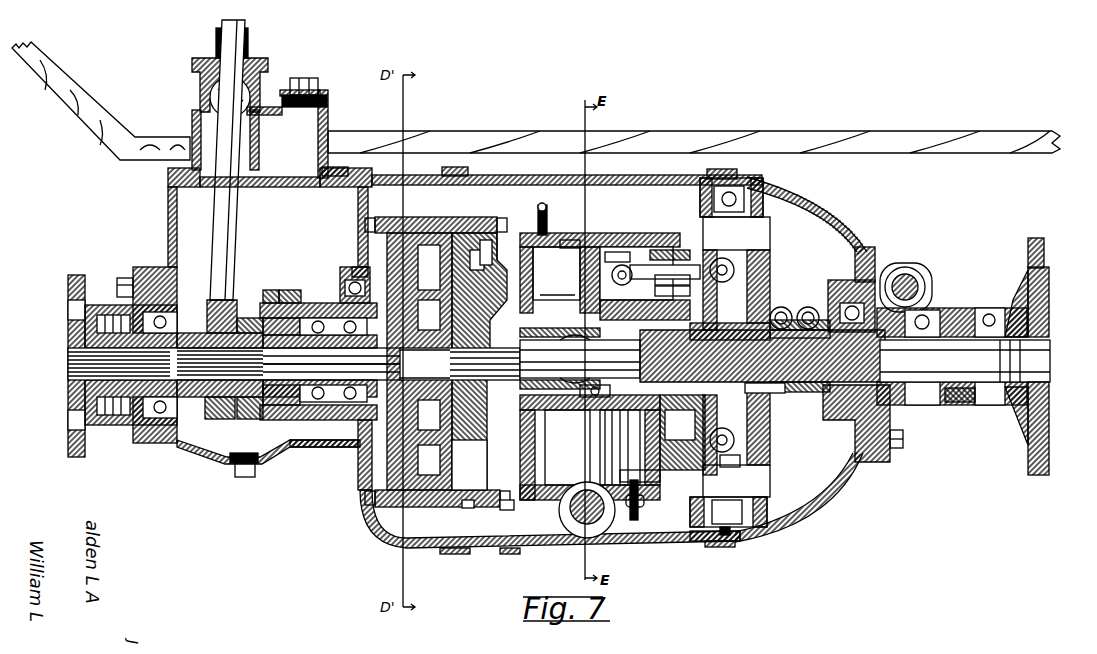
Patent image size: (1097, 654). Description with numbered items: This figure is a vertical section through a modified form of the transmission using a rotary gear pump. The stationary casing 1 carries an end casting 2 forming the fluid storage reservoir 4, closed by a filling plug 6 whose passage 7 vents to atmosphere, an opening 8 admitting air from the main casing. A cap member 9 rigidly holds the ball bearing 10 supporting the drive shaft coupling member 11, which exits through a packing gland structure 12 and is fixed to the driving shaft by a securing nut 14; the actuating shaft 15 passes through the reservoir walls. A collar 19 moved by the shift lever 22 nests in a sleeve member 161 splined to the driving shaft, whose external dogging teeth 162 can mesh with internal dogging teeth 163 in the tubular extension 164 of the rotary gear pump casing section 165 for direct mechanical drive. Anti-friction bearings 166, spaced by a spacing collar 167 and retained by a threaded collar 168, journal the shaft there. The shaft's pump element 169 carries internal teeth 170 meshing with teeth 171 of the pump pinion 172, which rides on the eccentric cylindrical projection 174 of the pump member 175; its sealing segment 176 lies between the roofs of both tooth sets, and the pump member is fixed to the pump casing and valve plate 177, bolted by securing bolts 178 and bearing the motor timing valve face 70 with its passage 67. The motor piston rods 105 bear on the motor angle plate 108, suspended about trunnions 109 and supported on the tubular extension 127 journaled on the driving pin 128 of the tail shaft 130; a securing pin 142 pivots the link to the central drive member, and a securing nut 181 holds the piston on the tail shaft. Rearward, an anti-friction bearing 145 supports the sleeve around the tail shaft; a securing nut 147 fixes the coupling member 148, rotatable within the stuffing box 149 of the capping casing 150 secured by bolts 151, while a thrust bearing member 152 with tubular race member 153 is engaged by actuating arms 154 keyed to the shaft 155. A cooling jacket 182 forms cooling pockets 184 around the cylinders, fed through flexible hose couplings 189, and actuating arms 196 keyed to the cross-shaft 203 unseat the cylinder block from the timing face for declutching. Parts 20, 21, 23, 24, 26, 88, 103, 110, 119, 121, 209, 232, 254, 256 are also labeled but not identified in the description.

The stationary casing 1 is at (655, 545).
The end casting 2 is at (366, 508).
The fluid storage reservoir 4 is at (168, 222).
The filling plug 6 is at (327, 86).
The passage 7 is at (305, 78).
The opening 8 is at (352, 192).
The cap member 9 is at (122, 285).
The ball bearing 10 is at (175, 296).
The drive shaft coupling member 11 is at (68, 305).
The packing gland structure 12 is at (125, 315).
The securing nut 14 is at (70, 346).
The actuating shaft 15 is at (262, 465).
The collar 19 is at (262, 300).
The collar 20 is at (205, 400).
The gear 21 is at (200, 332).
The shift lever 22 is at (240, 148).
The ball 23 is at (210, 104).
The ball socket cap 24 is at (198, 88).
The bearing cap 26 is at (360, 266).
The passage 67 is at (600, 247).
The motor timing valve face 70 is at (582, 245).
The pump piston 88 is at (545, 437).
The pin 103 is at (644, 498).
The motor piston rods 105 is at (620, 286).
The motor angle plate 108 is at (752, 243).
The trunnions 109 is at (755, 181).
The plug 110 is at (778, 508).
The spline shaft 119 is at (710, 155).
The rollers 121 is at (800, 310).
The tubular extension 127 is at (805, 312).
The driving pin 128 is at (775, 410).
The tail shaft 130 is at (666, 418).
The securing pin 142 is at (775, 390).
The anti-friction bearing 145 is at (866, 262).
The securing nut 147 is at (1055, 340).
The coupling member 148 is at (1028, 256).
The stuffing box 149 is at (990, 306).
The capping casing 150 is at (905, 420).
The bolts 151 is at (903, 445).
The anti-friction thrust bearing member 152 is at (962, 402).
The tubular race member 153 is at (675, 284).
The actuating arms 154 is at (557, 285).
The shaft 155 is at (935, 256).
The sleeve member 161 is at (135, 420).
The external dogging teeth 162 is at (292, 300).
The internal dogging teeth 163 is at (312, 302).
The tubular extension 164 is at (302, 446).
The rotary gear pump casing section 165 is at (362, 250).
The anti-friction bearings 166 is at (358, 326).
The spacing collar 167 is at (358, 397).
The collar 168 is at (258, 420).
The pump element 169 is at (350, 285).
The internal teeth 170 is at (478, 256).
The teeth 171 is at (560, 240).
The pump pinion 172 is at (534, 275).
The eccentric cylindrical projection 174 is at (398, 370).
The pump member 175 is at (502, 498).
The sealing segment 176 is at (437, 216).
The pump casing and valve plate 177 is at (525, 232).
The securing bolts 178 is at (505, 222).
The securing nut 181 is at (402, 452).
The cooling jacket 182 is at (652, 247).
The cooling pockets 184 is at (620, 235).
The flexible hose couplings 189 is at (548, 212).
The actuating arms 196 is at (660, 476).
The cross-shaft 203 is at (575, 538).
The bearing 209 is at (752, 470).
The spring 232 is at (675, 297).
The ball bearing 254 is at (935, 306).
The ball bearing 256 is at (590, 397).